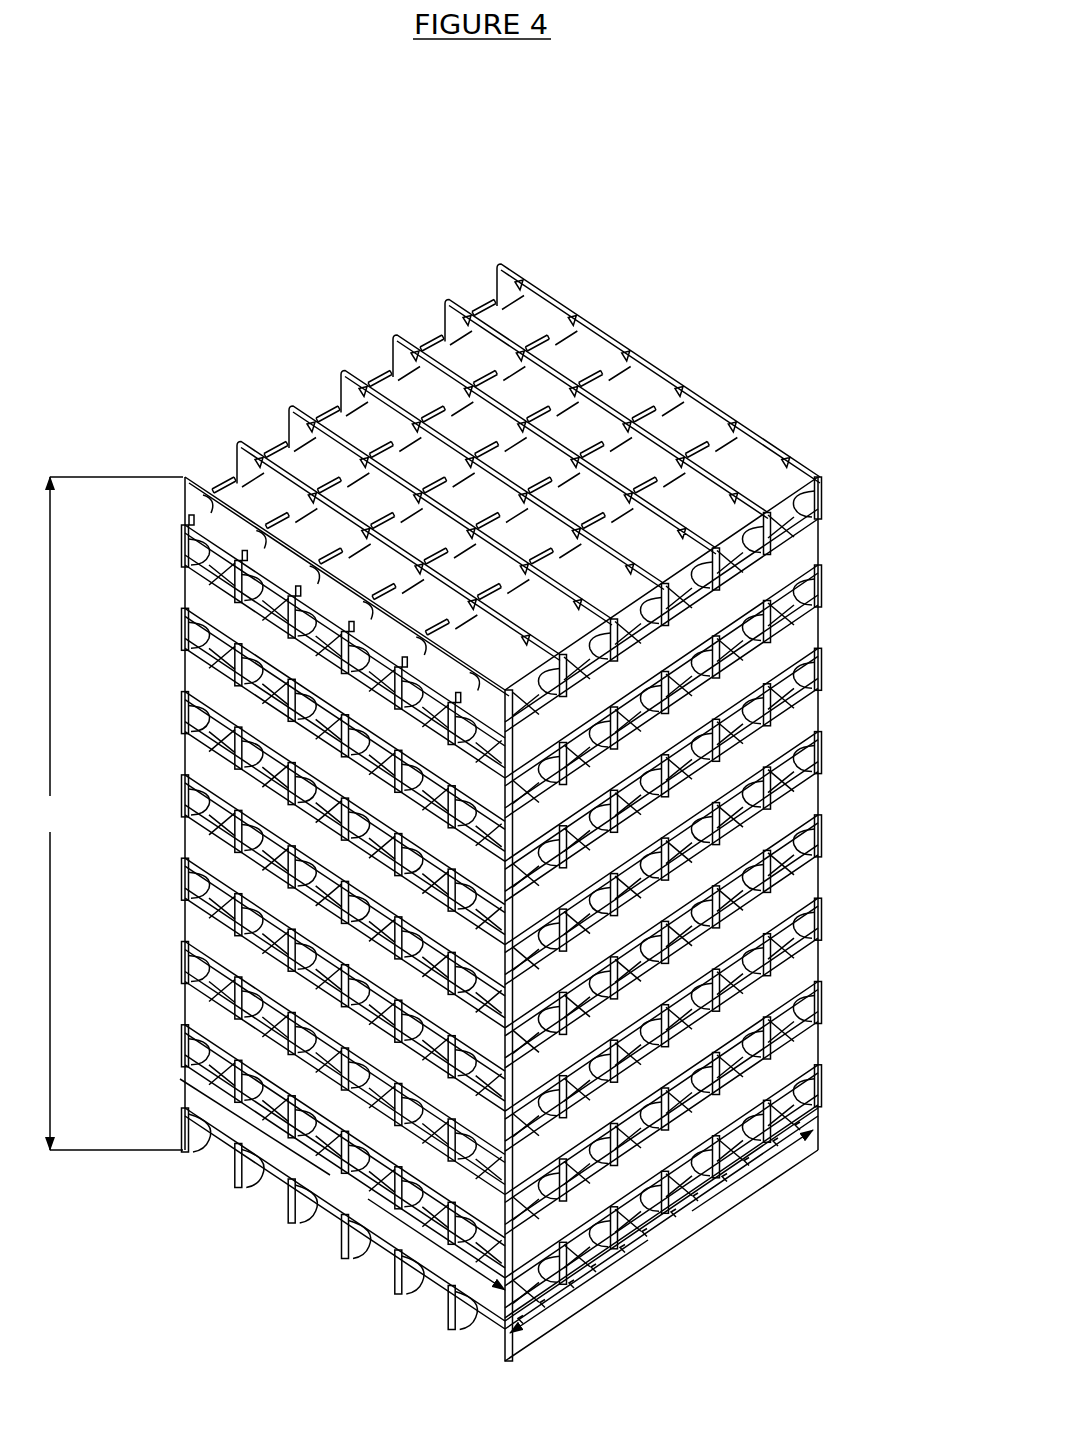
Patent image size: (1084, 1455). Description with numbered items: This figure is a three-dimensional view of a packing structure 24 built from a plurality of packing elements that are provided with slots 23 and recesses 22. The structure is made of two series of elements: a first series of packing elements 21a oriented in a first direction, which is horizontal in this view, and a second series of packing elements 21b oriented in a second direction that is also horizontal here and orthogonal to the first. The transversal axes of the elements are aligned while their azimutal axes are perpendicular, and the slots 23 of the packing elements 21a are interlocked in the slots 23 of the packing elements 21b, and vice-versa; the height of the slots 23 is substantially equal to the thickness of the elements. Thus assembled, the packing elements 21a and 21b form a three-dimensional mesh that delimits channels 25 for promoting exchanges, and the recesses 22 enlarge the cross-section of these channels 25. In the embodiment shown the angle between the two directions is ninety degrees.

The packing structure 24 is at (284, 303).
The packing elements of the first series 21a is at (240, 477).
The packing elements of the second series 21b is at (196, 715).
The recesses 22 is at (628, 352).
The slots 23 is at (710, 403).
The channels 25 is at (215, 813).